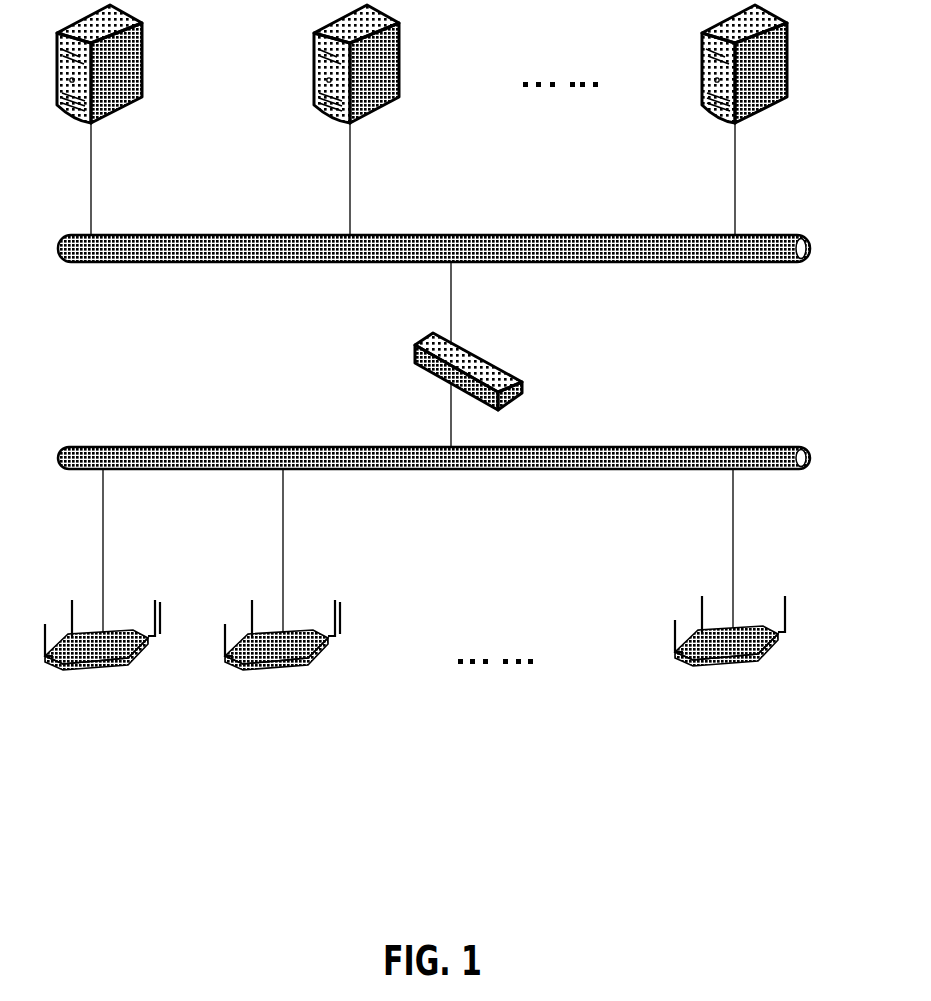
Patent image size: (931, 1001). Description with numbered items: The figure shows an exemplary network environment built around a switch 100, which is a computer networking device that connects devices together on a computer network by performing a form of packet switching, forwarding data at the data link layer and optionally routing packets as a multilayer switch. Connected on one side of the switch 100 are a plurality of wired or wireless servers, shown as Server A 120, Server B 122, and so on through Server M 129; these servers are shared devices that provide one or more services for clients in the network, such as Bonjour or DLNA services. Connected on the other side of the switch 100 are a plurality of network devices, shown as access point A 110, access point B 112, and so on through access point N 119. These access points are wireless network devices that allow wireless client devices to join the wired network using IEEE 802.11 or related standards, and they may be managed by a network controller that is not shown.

The Server A 120 is at (123, 166).
The Server B 122 is at (430, 166).
The Server M 129 is at (810, 174).
The switch 100 is at (580, 376).
The access point A 110 is at (120, 720).
The access point B 112 is at (300, 720).
The access point N 119 is at (748, 716).